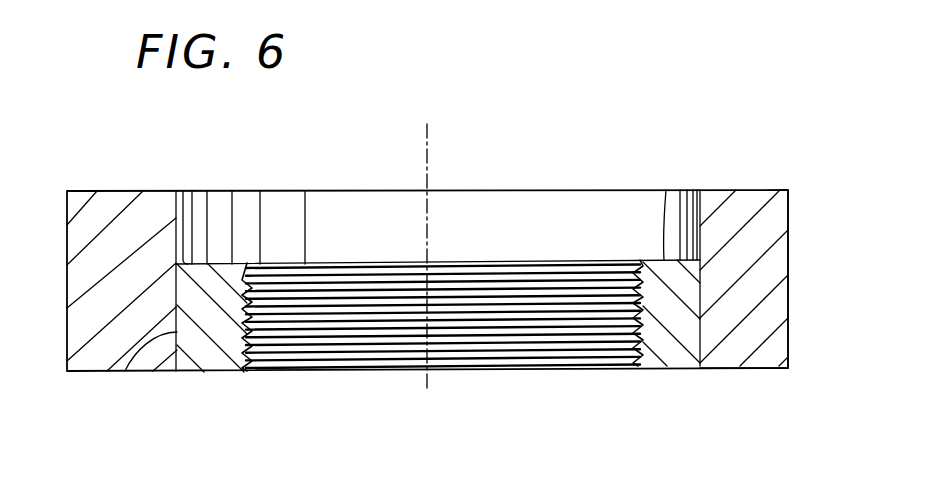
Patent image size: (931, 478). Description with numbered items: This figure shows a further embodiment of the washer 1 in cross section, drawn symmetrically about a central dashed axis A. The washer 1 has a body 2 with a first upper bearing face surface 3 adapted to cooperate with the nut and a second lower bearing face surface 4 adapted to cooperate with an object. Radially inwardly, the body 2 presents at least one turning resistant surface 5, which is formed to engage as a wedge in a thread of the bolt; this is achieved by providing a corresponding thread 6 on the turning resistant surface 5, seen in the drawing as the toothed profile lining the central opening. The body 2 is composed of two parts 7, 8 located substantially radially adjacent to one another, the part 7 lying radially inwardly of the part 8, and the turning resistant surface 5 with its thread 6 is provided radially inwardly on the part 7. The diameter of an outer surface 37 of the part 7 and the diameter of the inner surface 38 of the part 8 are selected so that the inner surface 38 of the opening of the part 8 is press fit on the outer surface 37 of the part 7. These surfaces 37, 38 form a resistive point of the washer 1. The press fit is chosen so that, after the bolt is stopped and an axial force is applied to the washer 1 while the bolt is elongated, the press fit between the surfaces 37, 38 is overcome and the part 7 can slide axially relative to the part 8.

The washer 1 is at (56, 104).
The body 2 is at (856, 119).
The first upper bearing face surface 3 is at (720, 190).
The second lower bearing face surface 4 is at (755, 370).
The turning resistant surface 5 is at (623, 370).
The thread 6 is at (302, 388).
The part (radially inner part) 7 is at (672, 353).
The part (radially outer part) 8 is at (856, 291).
The outer surface 37 is at (203, 372).
The inner surface 38 is at (122, 372).
The central axis A is at (427, 160).